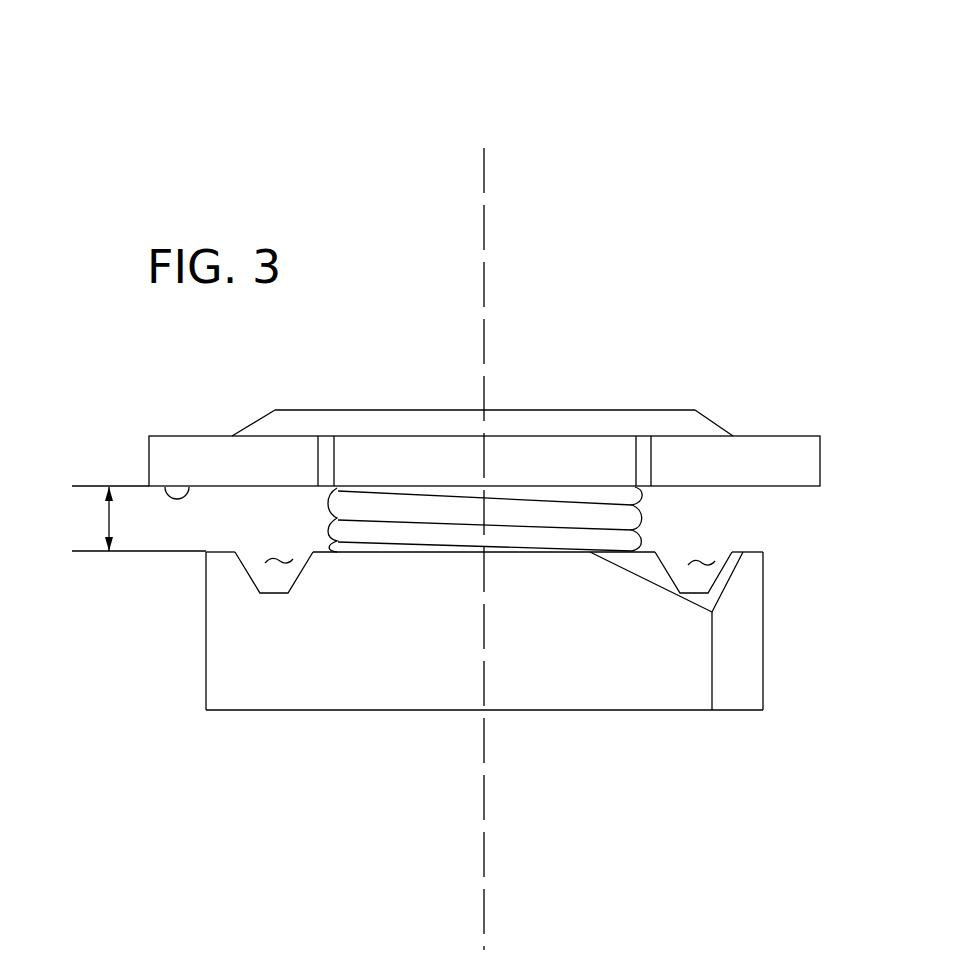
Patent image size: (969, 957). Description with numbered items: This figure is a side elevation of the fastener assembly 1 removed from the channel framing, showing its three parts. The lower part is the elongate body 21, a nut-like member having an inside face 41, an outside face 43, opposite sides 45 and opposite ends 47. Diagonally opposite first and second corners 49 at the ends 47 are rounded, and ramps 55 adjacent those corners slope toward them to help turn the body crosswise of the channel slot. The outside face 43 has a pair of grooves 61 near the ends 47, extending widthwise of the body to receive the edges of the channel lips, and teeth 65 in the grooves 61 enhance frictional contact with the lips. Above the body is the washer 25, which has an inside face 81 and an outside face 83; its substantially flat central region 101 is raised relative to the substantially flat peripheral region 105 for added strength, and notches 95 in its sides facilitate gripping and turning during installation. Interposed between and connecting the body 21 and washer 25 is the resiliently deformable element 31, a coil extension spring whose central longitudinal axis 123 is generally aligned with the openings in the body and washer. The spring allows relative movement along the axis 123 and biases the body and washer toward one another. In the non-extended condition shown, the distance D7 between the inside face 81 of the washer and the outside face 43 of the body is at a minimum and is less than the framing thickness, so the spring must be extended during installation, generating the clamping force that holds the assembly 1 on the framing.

The fastener assembly 1 is at (673, 125).
The central longitudinal axis 123 is at (484, 212).
The washer 25 is at (822, 473).
The outside face 83 is at (556, 377).
The central region 101 is at (293, 410).
The peripheral region 105 is at (767, 436).
The notches 95 is at (636, 462).
The inside face 81 is at (166, 487).
The resiliently deformable element 31 is at (646, 512).
The elongate body 21 is at (562, 713).
The opposite sides 45 is at (370, 682).
The inside face 41 is at (242, 711).
The opposite ends 47 is at (206, 681).
The first and second corners 49 is at (747, 650).
The ramps 55 is at (645, 568).
The outside face 43 is at (218, 549).
The grooves 61 is at (262, 578).
The teeth 65 is at (280, 568).
The distance between washer inside face and body outside face D7 is at (109, 518).